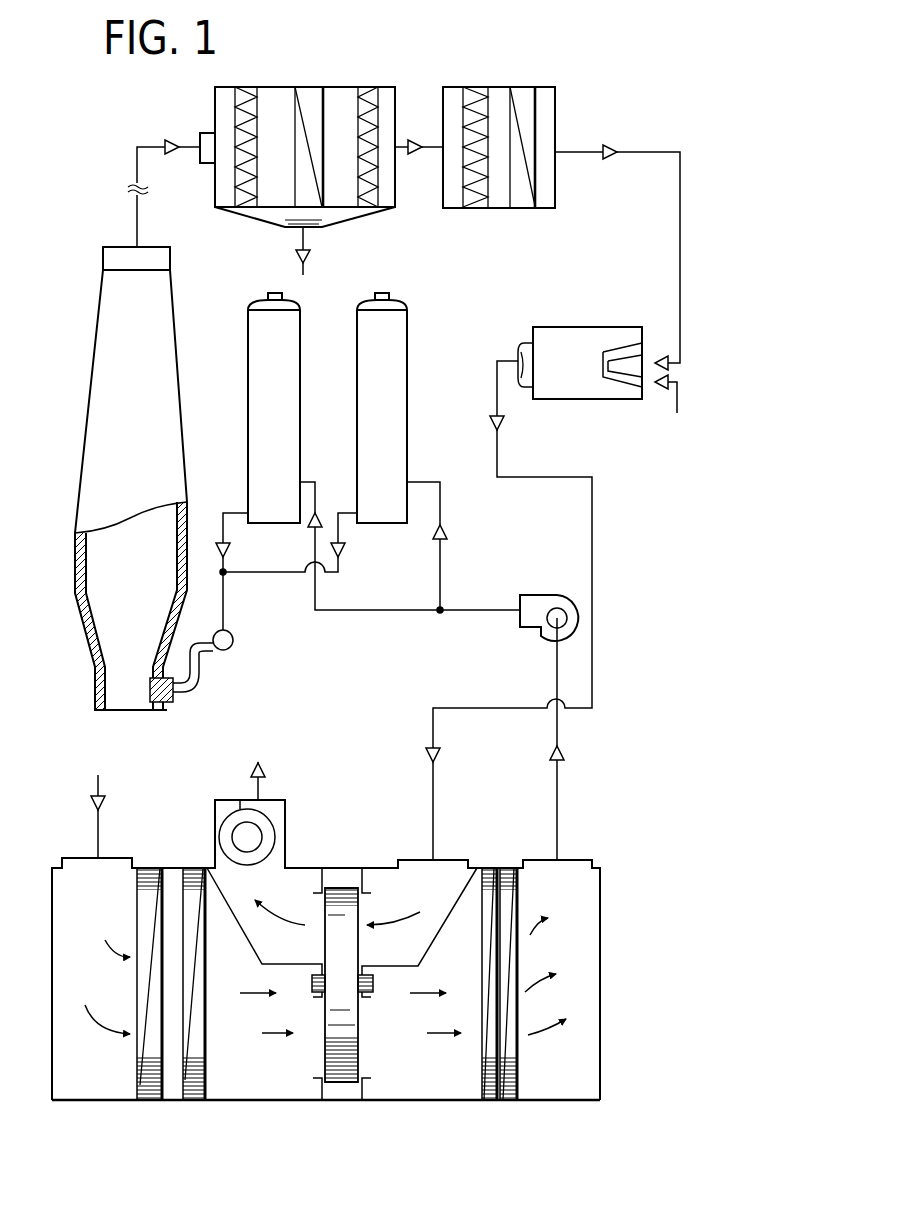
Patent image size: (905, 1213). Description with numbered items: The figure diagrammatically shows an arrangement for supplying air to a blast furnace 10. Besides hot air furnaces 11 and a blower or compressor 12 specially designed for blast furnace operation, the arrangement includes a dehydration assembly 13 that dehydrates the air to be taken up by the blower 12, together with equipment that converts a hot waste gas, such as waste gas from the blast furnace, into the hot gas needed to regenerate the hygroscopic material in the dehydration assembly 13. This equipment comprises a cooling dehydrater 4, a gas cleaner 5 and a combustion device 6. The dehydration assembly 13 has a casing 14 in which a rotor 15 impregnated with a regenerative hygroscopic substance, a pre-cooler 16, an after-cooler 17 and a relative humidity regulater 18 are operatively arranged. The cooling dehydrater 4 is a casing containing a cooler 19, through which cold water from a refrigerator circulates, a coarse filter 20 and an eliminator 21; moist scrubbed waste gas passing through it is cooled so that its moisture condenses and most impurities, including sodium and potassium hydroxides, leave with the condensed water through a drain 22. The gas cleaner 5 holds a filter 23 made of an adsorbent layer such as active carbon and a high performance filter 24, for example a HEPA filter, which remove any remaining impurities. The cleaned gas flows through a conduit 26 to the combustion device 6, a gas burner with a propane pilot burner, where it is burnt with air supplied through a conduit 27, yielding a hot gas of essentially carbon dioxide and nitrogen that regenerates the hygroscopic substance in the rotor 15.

The cooling dehydrater 4 is at (322, 82).
The gas cleaner 5 is at (497, 82).
The combustion device 6 is at (594, 322).
The blast furnace 10 is at (98, 452).
The hot air furnaces 11 is at (295, 392).
The blower or compressor 12 is at (538, 603).
The dehydration assembly 13 is at (327, 849).
The casing 14 is at (435, 1100).
The rotor 15 is at (350, 1018).
The pre-cooler 16 is at (145, 978).
The after-cooler 17 is at (485, 956).
The relative humidity regulater 18 is at (200, 969).
The cooler 19 is at (313, 137).
The coarse filter 20 is at (243, 125).
The eliminator 21 is at (378, 107).
The drain 22 is at (305, 237).
The filter 23 is at (486, 183).
The high performance filter 24 is at (522, 197).
The conduit 26 is at (680, 236).
The conduit 27 is at (677, 413).